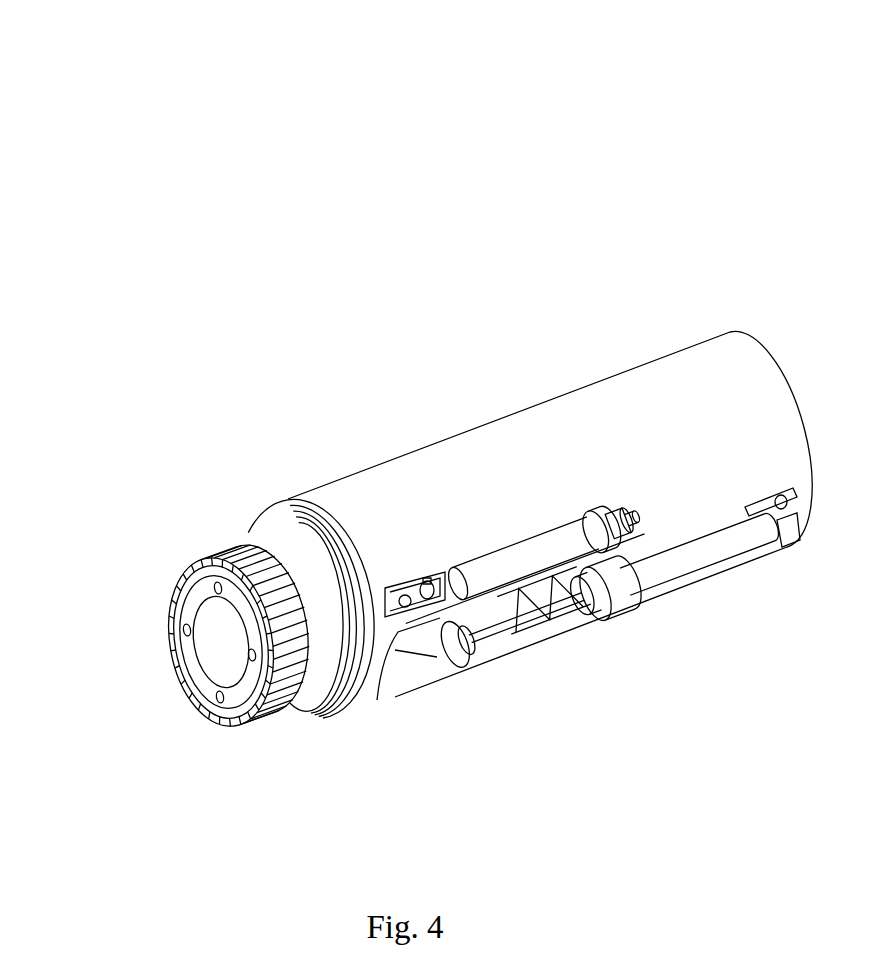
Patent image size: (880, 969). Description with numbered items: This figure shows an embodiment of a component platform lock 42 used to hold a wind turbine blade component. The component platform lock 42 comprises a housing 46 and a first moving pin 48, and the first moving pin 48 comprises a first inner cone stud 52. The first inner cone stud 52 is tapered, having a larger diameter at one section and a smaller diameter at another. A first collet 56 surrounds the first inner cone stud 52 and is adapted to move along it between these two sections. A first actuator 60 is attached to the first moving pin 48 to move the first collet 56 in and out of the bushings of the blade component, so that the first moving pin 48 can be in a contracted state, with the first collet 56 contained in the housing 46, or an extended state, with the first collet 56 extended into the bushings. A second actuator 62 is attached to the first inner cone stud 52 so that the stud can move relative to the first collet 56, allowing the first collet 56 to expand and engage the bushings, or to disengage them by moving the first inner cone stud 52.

The component platform lock 42 is at (471, 150).
The housing 46 is at (437, 445).
The first moving pin 48 is at (224, 495).
The first inner cone stud 52 is at (177, 673).
The first collet 56 is at (158, 606).
The first actuator 60 is at (500, 590).
The second actuator 62 is at (677, 600).